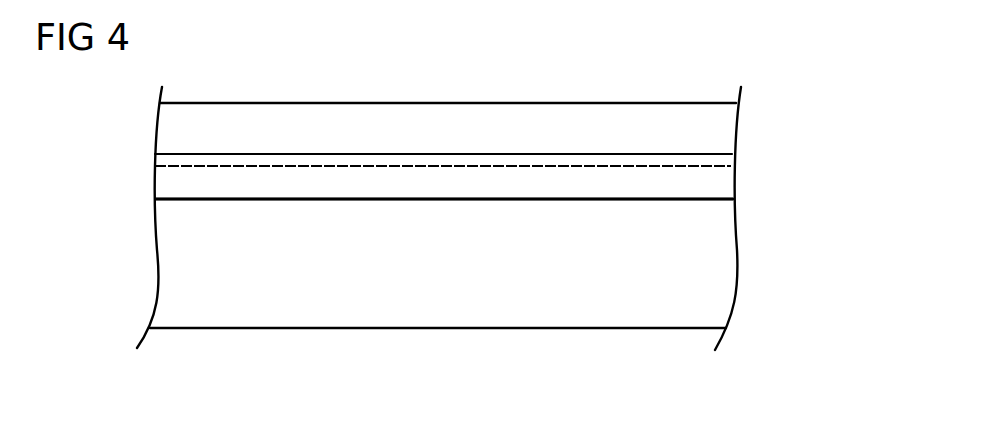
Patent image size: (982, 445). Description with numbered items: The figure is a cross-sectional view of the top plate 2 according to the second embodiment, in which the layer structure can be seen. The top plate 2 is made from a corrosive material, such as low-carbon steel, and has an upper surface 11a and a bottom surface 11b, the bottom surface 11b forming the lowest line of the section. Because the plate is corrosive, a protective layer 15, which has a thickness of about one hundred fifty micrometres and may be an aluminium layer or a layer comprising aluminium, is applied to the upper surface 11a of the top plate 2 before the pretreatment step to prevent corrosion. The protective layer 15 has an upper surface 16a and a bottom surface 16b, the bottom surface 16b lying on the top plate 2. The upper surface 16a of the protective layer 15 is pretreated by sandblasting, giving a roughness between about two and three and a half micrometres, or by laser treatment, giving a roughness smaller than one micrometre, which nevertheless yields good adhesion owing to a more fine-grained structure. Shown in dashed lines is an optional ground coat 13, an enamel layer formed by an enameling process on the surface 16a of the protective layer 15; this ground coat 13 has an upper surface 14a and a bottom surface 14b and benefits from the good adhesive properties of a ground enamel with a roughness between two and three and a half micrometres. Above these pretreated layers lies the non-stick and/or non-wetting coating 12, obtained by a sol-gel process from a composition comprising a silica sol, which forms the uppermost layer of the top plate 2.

The top plate 2 is at (707, 278).
The upper surface 11a is at (173, 197).
The bottom surface 11b is at (627, 328).
The non-stick and/or non-wetting coating 12 is at (704, 132).
The ground coat 13 is at (157, 164).
The upper surface 14a is at (352, 155).
The bottom surface 14b is at (263, 167).
The protective layer 15 is at (709, 192).
The upper surface 16a is at (407, 166).
The bottom surface 16b is at (557, 199).